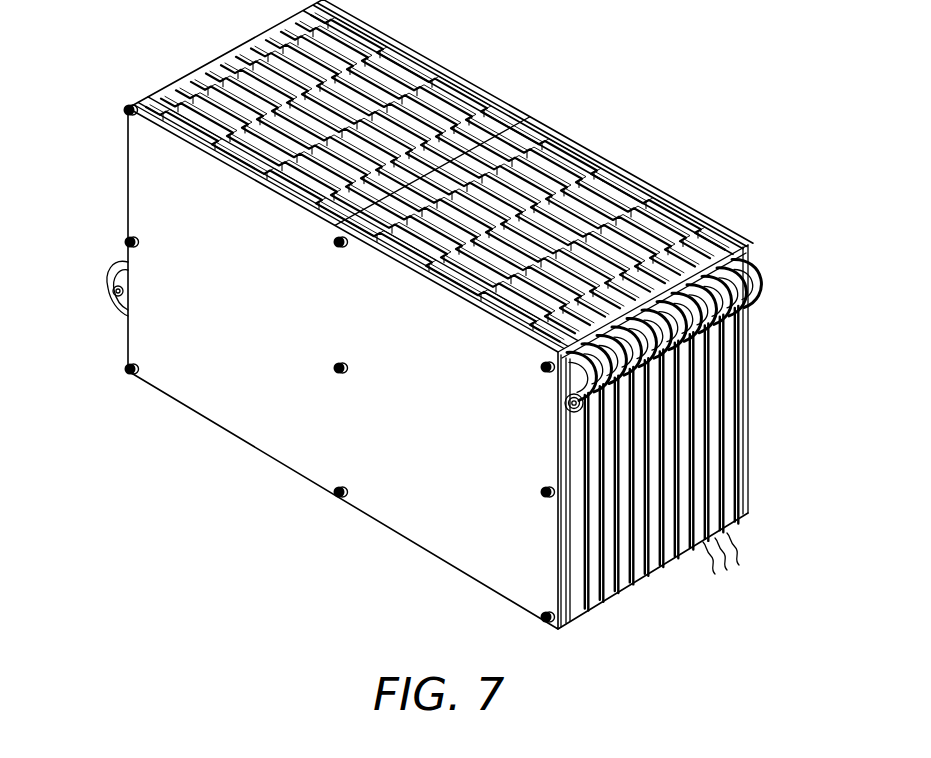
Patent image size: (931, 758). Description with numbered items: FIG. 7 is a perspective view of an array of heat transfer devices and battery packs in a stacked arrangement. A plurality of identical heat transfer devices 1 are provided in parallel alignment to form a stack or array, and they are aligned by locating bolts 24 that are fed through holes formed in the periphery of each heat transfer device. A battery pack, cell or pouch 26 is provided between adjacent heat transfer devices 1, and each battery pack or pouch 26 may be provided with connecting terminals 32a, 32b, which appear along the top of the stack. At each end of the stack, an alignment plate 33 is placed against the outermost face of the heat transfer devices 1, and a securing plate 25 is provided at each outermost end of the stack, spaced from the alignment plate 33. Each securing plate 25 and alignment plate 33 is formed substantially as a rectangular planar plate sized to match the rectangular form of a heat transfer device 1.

The heat transfer device 1 is at (769, 293).
The locating bolt 24 is at (127, 111).
The securing plate 25 is at (719, 233).
The battery pack, cell or pouch 26 is at (724, 563).
The connecting terminal 32a is at (658, 210).
The connecting terminal 32b is at (567, 157).
The alignment plate 33 is at (747, 459).